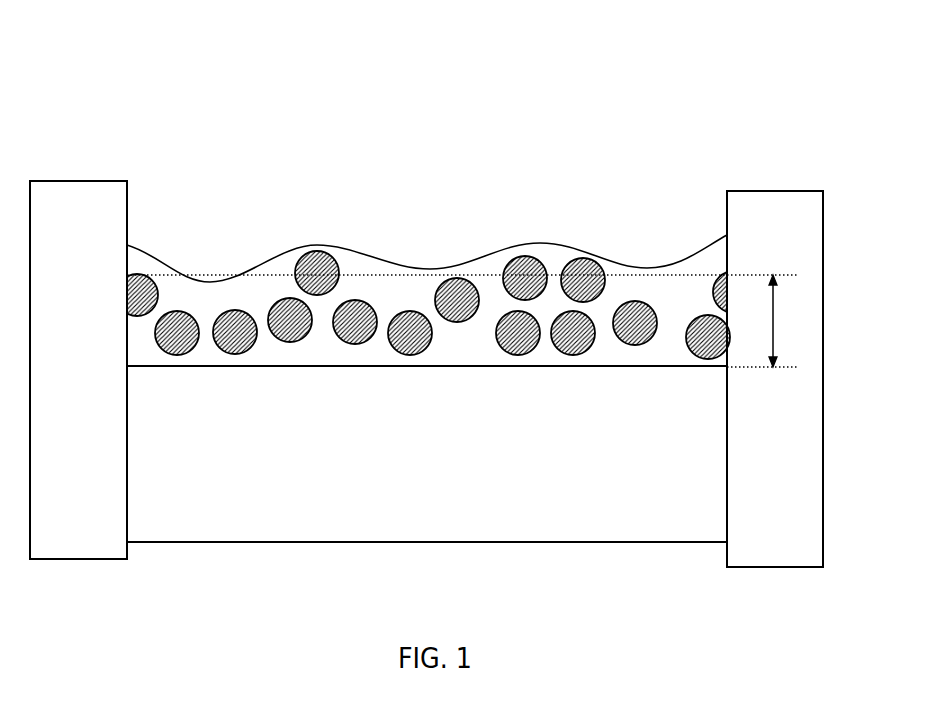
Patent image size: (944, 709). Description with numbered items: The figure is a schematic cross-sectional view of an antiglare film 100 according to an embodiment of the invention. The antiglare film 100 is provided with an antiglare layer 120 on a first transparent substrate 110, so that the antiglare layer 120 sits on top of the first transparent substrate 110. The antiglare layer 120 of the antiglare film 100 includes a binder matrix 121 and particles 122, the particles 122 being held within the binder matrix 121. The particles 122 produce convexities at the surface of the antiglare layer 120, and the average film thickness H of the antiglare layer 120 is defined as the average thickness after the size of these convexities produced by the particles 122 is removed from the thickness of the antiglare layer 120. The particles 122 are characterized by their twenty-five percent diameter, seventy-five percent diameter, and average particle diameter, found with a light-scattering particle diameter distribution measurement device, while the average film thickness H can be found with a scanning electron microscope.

The antiglare film 100 is at (421, 33).
The first transparent substrate 110 is at (683, 437).
The antiglare layer 120 is at (727, 240).
The binder matrix 121 is at (622, 282).
The particles 122 is at (313, 273).